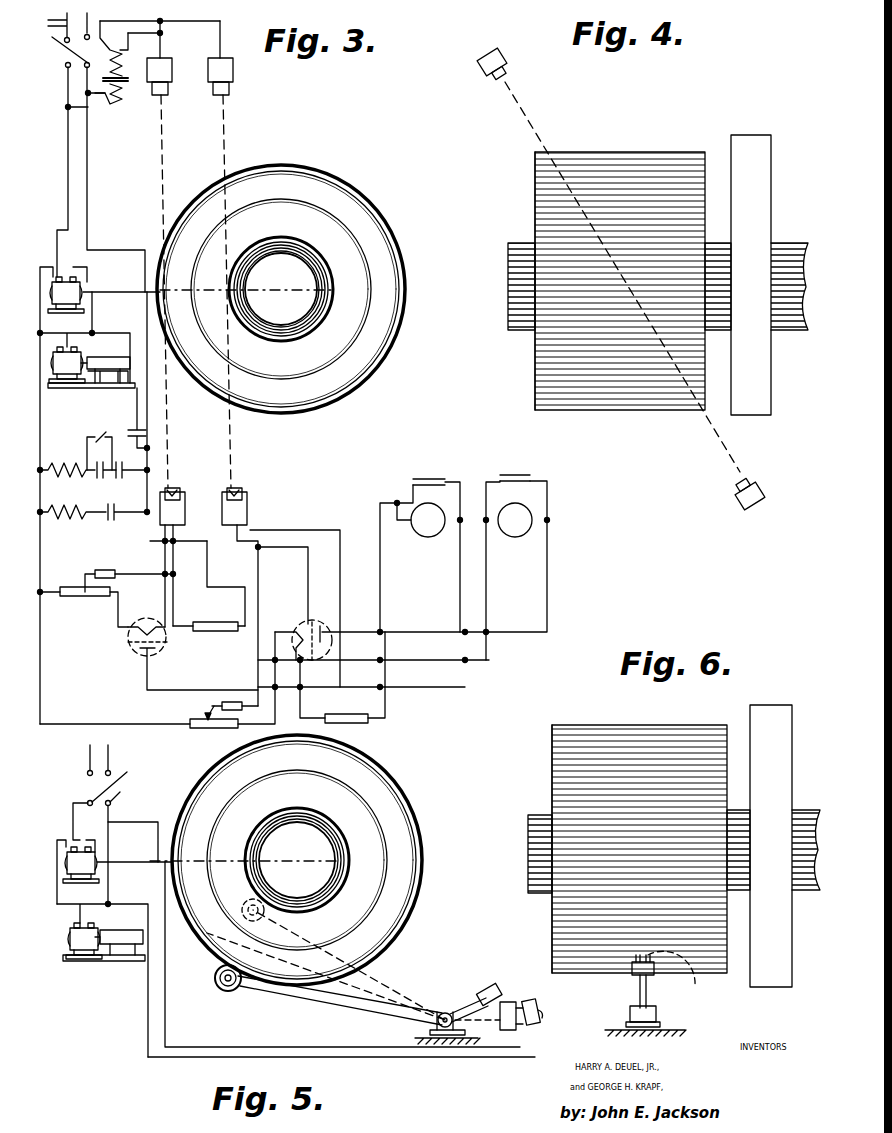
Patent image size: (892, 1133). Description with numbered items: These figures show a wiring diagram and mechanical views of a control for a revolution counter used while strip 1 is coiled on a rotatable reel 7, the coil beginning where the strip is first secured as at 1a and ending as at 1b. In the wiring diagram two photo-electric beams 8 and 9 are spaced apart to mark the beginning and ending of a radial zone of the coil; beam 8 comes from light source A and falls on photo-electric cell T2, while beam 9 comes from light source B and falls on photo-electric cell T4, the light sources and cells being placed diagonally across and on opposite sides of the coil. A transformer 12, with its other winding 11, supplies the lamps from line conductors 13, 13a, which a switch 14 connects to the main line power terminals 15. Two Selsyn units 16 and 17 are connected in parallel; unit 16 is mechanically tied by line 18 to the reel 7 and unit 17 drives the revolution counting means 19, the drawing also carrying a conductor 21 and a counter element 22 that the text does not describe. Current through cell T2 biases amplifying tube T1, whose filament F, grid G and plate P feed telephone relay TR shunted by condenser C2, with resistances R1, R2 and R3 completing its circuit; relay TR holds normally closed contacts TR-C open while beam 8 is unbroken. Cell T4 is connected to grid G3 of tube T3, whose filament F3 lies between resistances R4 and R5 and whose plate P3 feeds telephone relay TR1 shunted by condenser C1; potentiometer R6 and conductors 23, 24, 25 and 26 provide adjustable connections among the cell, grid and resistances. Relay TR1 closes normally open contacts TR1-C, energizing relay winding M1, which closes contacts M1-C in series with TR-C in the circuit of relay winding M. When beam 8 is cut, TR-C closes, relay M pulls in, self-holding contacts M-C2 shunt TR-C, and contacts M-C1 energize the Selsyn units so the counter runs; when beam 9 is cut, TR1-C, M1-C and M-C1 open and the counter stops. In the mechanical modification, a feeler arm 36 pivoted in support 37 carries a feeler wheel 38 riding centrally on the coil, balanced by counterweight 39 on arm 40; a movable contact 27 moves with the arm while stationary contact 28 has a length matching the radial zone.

In FIG. 3, the strip 1 is at (423, 161).
In FIG. 5, the strip 1 is at (418, 735).
In FIG. 3, the beginning of the strip 1a is at (282, 274).
In FIG. 4, the beginning of the strip 1a is at (534, 242).
In FIG. 6, the beginning of the strip 1a is at (552, 814).
In FIG. 5, the beginning of the strip 1a is at (298, 842).
In FIG. 3, the end of the coiled strip 1b is at (294, 162).
In FIG. 4, the end of the coiled strip 1b is at (606, 155).
In FIG. 6, the end of the coiled strip 1b is at (642, 726).
In FIG. 5, the end of the coiled strip 1b is at (292, 736).
In FIG. 3, the rotatable core or reel 7 is at (330, 290).
In FIG. 4, the rotatable core or reel 7 is at (508, 260).
In FIG. 6, the rotatable core or reel 7 is at (528, 856).
In FIG. 5, the rotatable core or reel 7 is at (342, 860).
In FIG. 3, the photo-electric beam 8 is at (226, 154).
In FIG. 3, the light beam 9 is at (166, 154).
In FIG. 4, the light beam 9 is at (518, 128).
In FIG. 3, the transformer primary 11 is at (114, 51).
In FIG. 3, the transformer 12 is at (112, 99).
In FIG. 3, the line conductor 13 is at (68, 208).
In FIG. 3, the line conductor 13a is at (92, 208).
In FIG. 3, the switch 14 is at (55, 62).
In FIG. 3, the main line power terminals 15 is at (60, 24).
In FIG. 3, the Selsyn unit 16 is at (48, 306).
In FIG. 5, the Selsyn unit 16 is at (102, 880).
In FIG. 3, the Selsyn unit 17 is at (72, 377).
In FIG. 5, the Selsyn unit 17 is at (90, 932).
In FIG. 3, the line 18 is at (100, 290).
In FIG. 5, the line 18 is at (114, 862).
In FIG. 3, the revolution counting means 19 is at (90, 384).
In FIG. 5, the revolution counting means 19 is at (108, 956).
In FIG. 3, the conductor 21 is at (92, 312).
In FIG. 3, the counter 22 is at (80, 336).
In FIG. 3, the conductor 23 is at (207, 588).
In FIG. 3, the conductor 24 is at (174, 541).
In FIG. 3, the conductor 25 is at (215, 622).
In FIG. 3, the conductor 26 is at (82, 584).
In FIG. 5, the movable contact 27 is at (518, 998).
In FIG. 5, the stationary contact 28 is at (534, 1002).
In FIG. 6, the feeler arm 36 is at (640, 998).
In FIG. 5, the feeler arm 36 is at (358, 1000).
In FIG. 6, the support 37 is at (650, 1012).
In FIG. 5, the support 37 is at (444, 1010).
In FIG. 6, the feeler wheel or roller 38 is at (693, 985).
In FIG. 5, the feeler wheel or roller 38 is at (216, 974).
In FIG. 5, the counterweight 39 is at (492, 992).
In FIG. 5, the arm 40 is at (466, 996).
In FIG. 3, the source of light A is at (232, 72).
In FIG. 3, the light source B is at (170, 72).
In FIG. 4, the light source B is at (474, 66).
In FIG. 3, the amplifying electronic tube T1 is at (304, 620).
In FIG. 3, the photo-electric cell T2 is at (248, 508).
In FIG. 3, the electronic amplifying tube T3 is at (160, 650).
In FIG. 3, the photo-electric cell T4 is at (184, 502).
In FIG. 4, the photo-electric cell T4 is at (736, 499).
In FIG. 3, the telephone relay TR is at (517, 520).
In FIG. 3, the telephone relay winding TR1 is at (430, 520).
In FIG. 3, the condenser C1 is at (420, 543).
In FIG. 3, the condenser C2 is at (516, 555).
In FIG. 3, the resistance unit R1 is at (194, 726).
In FIG. 3, the resistance unit R2 is at (346, 716).
In FIG. 3, the resistance unit R3 is at (214, 700).
In FIG. 3, the resistance R4 is at (96, 594).
In FIG. 3, the resistance R5 is at (196, 630).
In FIG. 3, the potentiometer resistance R6 is at (98, 573).
In FIG. 3, the relay winding M is at (72, 464).
In FIG. 3, the relay winding M1 is at (86, 522).
In FIG. 3, the pair of contacts M-C1 is at (142, 430).
In FIG. 3, the normally open self-holding contacts M-C2 is at (86, 480).
In FIG. 3, the normally open contacts M1-C is at (112, 476).
In FIG. 3, the normally closed contacts TR-C is at (76, 434).
In FIG. 3, the normally open contacts TR1-C is at (100, 520).
In FIG. 3, the filament F is at (284, 639).
In FIG. 3, the grid G is at (319, 627).
In FIG. 3, the plate P is at (330, 628).
In FIG. 3, the filament F3 is at (144, 618).
In FIG. 3, the grid G3 is at (118, 642).
In FIG. 3, the plate P3 is at (130, 654).